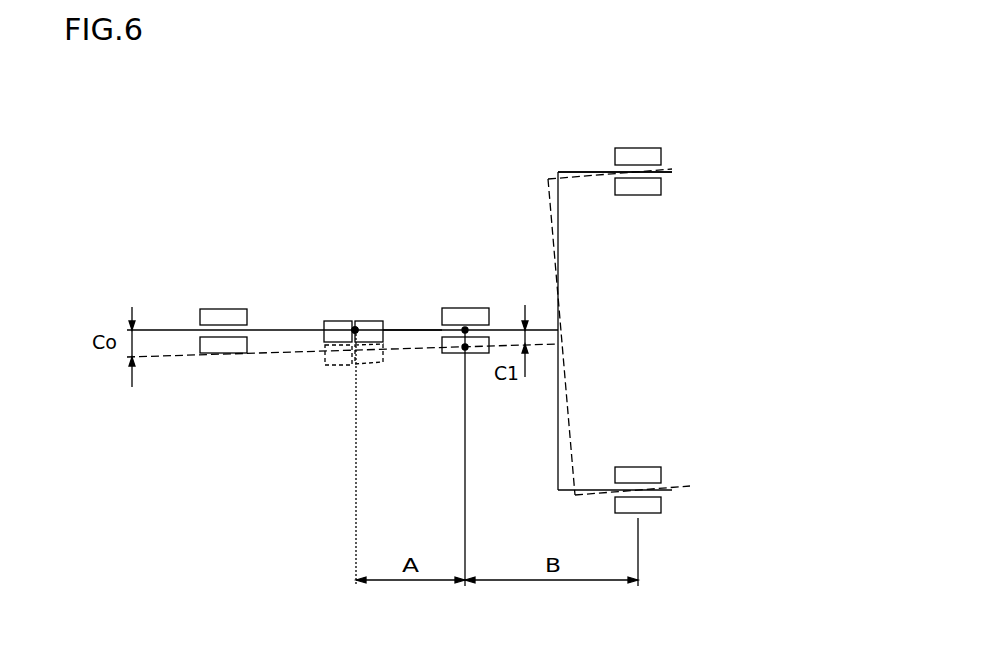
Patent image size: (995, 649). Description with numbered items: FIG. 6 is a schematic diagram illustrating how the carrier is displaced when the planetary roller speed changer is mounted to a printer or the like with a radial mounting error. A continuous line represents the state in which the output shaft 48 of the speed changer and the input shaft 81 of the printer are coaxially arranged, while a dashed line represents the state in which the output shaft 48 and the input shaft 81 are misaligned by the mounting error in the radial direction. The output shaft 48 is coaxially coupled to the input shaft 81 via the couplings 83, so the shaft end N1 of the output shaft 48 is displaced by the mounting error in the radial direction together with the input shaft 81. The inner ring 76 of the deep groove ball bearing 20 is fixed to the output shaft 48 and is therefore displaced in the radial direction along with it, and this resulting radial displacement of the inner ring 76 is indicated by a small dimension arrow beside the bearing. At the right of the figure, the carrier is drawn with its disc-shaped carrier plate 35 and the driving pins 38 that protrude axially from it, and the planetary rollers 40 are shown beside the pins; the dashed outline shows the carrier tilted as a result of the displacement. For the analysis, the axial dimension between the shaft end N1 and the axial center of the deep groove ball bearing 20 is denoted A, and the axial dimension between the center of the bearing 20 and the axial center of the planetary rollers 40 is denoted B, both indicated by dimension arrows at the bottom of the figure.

The input shaft 81 is at (287, 328).
The couplings 83 is at (358, 295).
The output shaft 48 is at (411, 328).
The inner ring 76 is at (481, 250).
The deep groove ball bearing 20 is at (478, 307).
The carrier plate 35 is at (558, 232).
The driving pins 38 is at (582, 172).
The planetary rollers 40 is at (643, 148).
The shaft end N1 is at (353, 335).